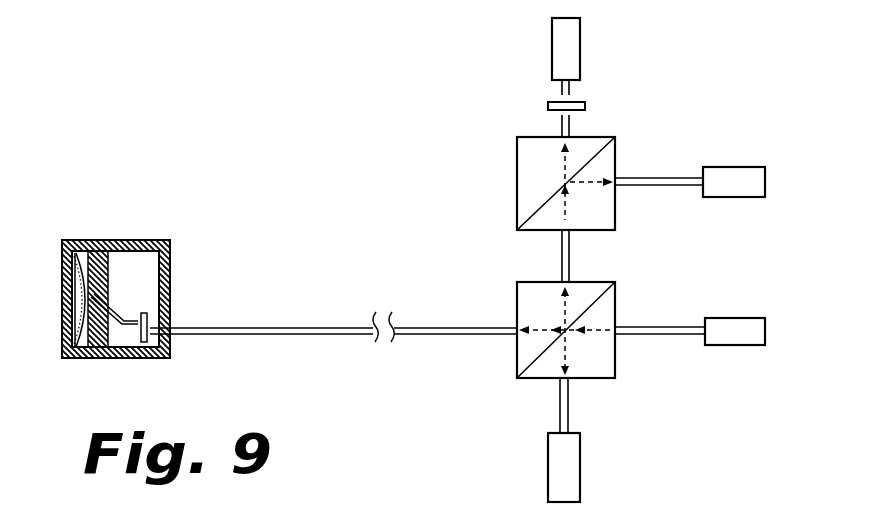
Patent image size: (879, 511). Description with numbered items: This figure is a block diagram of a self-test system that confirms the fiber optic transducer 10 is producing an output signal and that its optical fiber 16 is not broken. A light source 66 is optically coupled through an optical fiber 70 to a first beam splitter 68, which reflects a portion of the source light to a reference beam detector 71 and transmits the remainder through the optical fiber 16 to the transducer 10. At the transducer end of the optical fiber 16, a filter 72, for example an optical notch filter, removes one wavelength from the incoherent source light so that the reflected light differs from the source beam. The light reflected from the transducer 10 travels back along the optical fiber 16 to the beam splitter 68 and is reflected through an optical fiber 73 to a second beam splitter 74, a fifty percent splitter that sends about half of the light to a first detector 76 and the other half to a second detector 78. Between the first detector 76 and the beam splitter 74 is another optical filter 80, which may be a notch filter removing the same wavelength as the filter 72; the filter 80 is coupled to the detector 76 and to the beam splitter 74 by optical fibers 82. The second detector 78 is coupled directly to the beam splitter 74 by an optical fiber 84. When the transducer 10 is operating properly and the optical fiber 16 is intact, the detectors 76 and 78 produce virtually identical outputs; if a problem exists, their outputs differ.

The fiber optic transducer 10 is at (84, 228).
The filter 72 is at (147, 313).
The optical fiber 16 is at (332, 326).
The first beam splitter 68 is at (595, 380).
The optical fiber 73 is at (561, 255).
The second beam splitter 74 is at (617, 213).
The optical fibers 82 is at (558, 122).
The optical filter 80 is at (577, 102).
The first detector 76 is at (552, 40).
The optical fiber 84 is at (660, 178).
The second detector 78 is at (737, 197).
The optical fiber 70 is at (650, 327).
The light source 66 is at (715, 345).
The reference beam detector 71 is at (582, 470).